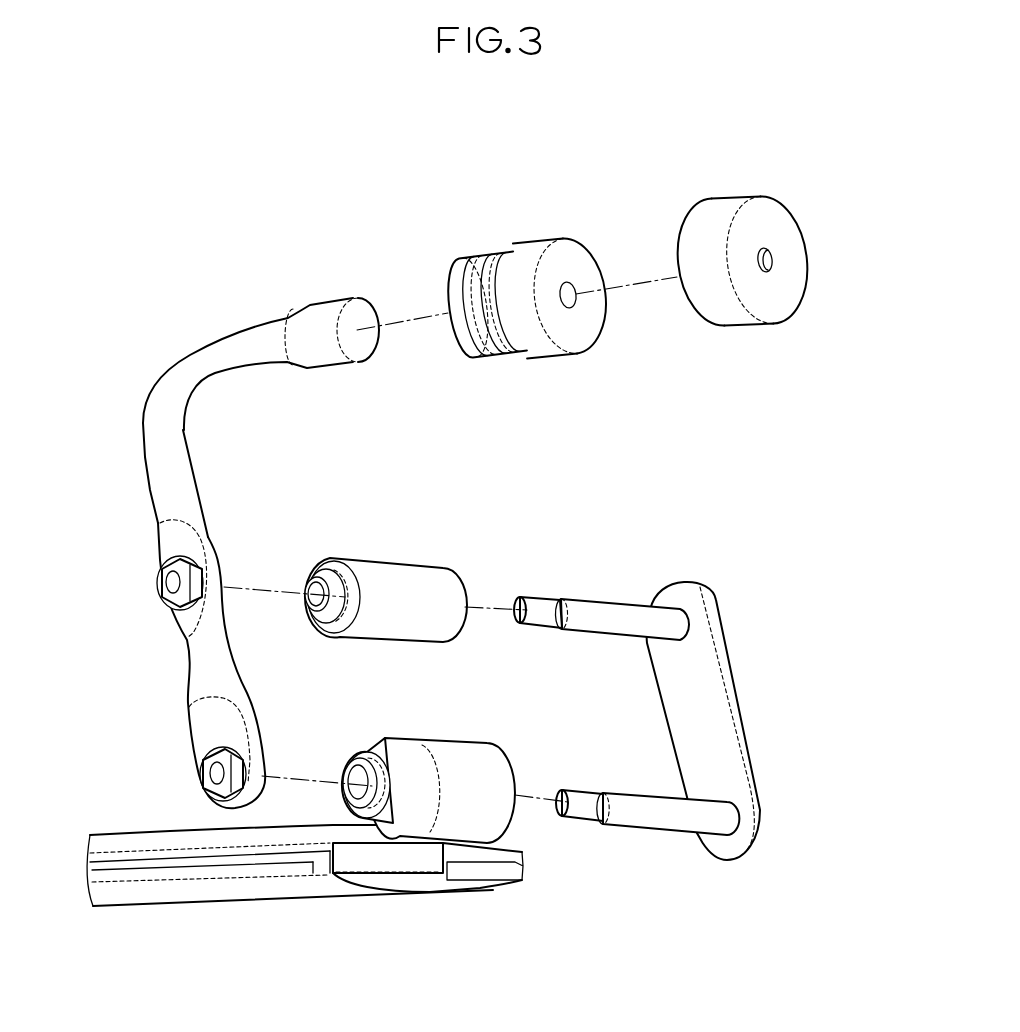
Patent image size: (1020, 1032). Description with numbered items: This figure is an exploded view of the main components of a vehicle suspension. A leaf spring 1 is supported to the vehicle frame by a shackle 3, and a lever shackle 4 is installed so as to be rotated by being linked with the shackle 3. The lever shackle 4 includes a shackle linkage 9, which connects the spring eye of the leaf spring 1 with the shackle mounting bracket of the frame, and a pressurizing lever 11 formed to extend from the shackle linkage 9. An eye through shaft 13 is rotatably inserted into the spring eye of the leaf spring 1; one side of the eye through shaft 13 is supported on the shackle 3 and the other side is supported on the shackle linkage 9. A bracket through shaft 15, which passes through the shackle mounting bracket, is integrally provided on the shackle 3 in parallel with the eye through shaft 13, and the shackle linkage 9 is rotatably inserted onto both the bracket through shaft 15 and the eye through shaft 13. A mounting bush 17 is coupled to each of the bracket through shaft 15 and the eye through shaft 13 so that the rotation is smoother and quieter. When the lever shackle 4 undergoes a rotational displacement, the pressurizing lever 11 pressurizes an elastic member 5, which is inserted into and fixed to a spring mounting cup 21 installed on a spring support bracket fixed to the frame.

The leaf spring 1 is at (178, 890).
The shackle 3 is at (713, 703).
The lever shackle 4 is at (162, 473).
The elastic member 5 is at (467, 262).
The shackle linkage 9 is at (143, 527).
The pressurizing lever 11 is at (347, 290).
The eye through shaft 13 is at (653, 813).
The bracket through shaft 15 is at (625, 622).
The mounting bush 17 is at (402, 570).
The spring mounting cup 21 is at (717, 215).